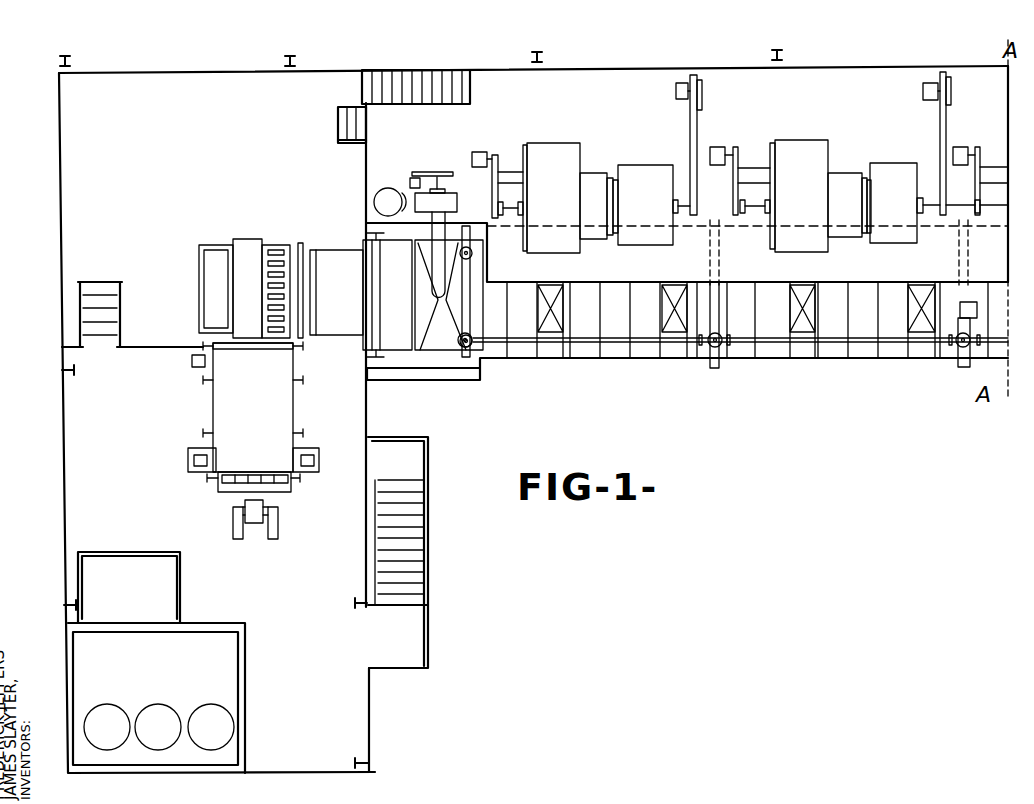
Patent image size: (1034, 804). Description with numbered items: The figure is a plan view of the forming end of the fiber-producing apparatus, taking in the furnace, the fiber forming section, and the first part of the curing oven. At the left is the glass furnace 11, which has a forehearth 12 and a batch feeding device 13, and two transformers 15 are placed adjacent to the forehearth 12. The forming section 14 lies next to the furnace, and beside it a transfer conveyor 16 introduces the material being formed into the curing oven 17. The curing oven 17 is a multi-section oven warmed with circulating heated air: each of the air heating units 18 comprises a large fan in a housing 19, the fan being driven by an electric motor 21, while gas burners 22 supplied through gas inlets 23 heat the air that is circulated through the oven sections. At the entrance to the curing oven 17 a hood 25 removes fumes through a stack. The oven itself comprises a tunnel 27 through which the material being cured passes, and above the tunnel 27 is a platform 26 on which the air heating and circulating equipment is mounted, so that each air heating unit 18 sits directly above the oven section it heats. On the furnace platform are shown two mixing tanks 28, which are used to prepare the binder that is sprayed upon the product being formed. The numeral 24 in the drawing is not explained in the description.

The glass furnace 11 is at (213, 405).
The forehearth 12 is at (240, 241).
The batch feeding device 13 is at (230, 519).
The forming section 14 is at (191, 261).
The transformers 15 is at (281, 249).
The transfer conveyor 16 is at (341, 238).
The curing oven 17 is at (589, 367).
The air heating units 18 is at (605, 159).
The housing 19 is at (546, 143).
The electric motor 21 is at (474, 158).
The gas burners 22 is at (690, 216).
The gas inlets 23 is at (697, 119).
The hopper 24 is at (433, 346).
The hood 25 is at (386, 201).
The platform 26 is at (641, 62).
The tunnel 27 is at (768, 348).
The mixing tanks 28 is at (196, 711).